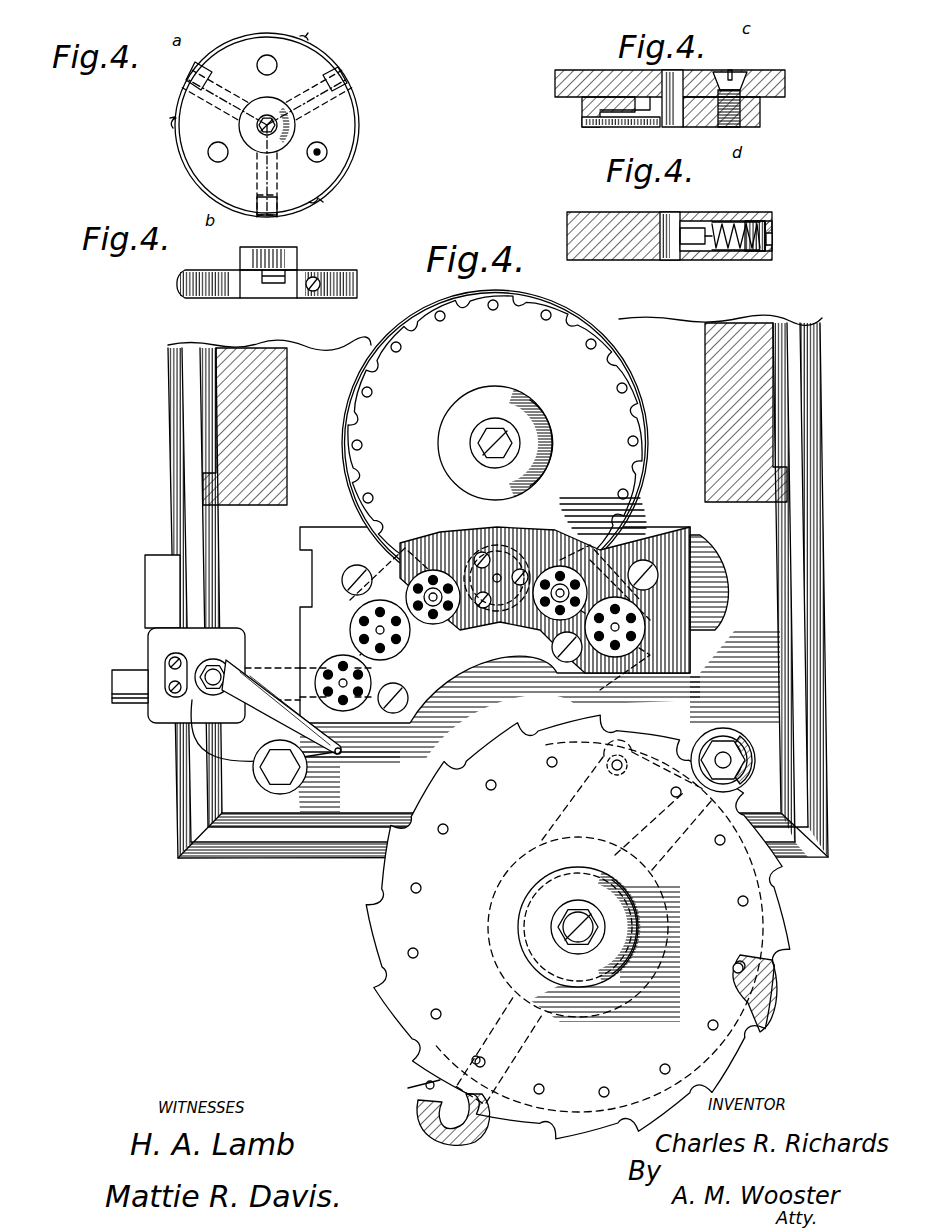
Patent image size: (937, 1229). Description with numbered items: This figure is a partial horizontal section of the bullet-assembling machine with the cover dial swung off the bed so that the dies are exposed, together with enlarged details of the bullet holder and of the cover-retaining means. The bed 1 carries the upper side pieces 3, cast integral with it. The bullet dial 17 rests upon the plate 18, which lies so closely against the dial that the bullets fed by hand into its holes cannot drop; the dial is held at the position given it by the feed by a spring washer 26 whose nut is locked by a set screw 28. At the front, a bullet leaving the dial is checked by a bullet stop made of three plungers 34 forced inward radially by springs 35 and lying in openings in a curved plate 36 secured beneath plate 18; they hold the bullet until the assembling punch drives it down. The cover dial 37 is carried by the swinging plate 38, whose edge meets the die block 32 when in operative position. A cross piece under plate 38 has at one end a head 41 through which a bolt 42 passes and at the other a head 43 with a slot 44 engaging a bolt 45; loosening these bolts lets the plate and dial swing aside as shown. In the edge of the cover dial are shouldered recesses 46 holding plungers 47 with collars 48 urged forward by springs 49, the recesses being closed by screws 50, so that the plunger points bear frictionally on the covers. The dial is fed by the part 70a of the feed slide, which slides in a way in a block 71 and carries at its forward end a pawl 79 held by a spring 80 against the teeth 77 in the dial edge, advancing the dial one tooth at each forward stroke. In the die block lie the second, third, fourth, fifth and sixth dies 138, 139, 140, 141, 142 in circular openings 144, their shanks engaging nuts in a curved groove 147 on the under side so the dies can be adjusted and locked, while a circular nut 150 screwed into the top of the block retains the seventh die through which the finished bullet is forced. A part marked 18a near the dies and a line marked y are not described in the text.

In FIG. 4, the bed 1 is at (858, 629).
In FIG. 4, the upper side pieces 3 is at (228, 405).
In FIG. 4, the bullet dial 17 is at (425, 343).
In FIG. 4C, the plate 18 is at (556, 80).
In FIG. 4, the plate 18 is at (645, 455).
In FIG. 4, the feed roll 18a is at (500, 600).
In FIG. 4, the spring washer 26 is at (455, 410).
In FIG. 4, the set screw 28 is at (478, 450).
In FIG. 4, the die block 32 is at (318, 582).
In FIG. 4A, the plungers 34 is at (345, 78).
In FIG. 4B, the plungers 34 is at (273, 284).
In FIG. 4C, the plungers 34 is at (662, 127).
In FIG. 4A, the springs 35 is at (358, 116).
In FIG. 4B, the springs 35 is at (358, 277).
In FIG. 4C, the springs 35 is at (582, 122).
In FIG. 4A, the plate 36 is at (267, 108).
In FIG. 4D, the cover dial 37 is at (612, 252).
In FIG. 4, the cover dial 37 is at (372, 958).
In FIG. 4, the swinging plate 38 is at (762, 926).
In FIG. 4, the head 41 is at (738, 738).
In FIG. 4, the bolt 42 is at (735, 758).
In FIG. 4, the head 43 is at (462, 1147).
In FIG. 4, the slot 44 is at (412, 1088).
In FIG. 4, the bolt 45 is at (272, 780).
In FIG. 4D, the shouldered recesses 46 is at (772, 222).
In FIG. 4, the shouldered recesses 46 is at (782, 985).
In FIG. 4D, the plungers 47 is at (700, 245).
In FIG. 4D, the collars 48 is at (730, 226).
In FIG. 4D, the springs 49 is at (752, 252).
In FIG. 4D, the screws 50 is at (773, 244).
In FIG. 4, the part of feed slide 70a is at (160, 614).
In FIG. 4, the block 71 is at (128, 676).
In FIG. 4, the teeth 77 is at (350, 437).
In FIG. 4, the pawl 79 is at (280, 704).
In FIG. 4, the spring 80 is at (240, 738).
In FIG. 4, the second die 138 is at (660, 655).
In FIG. 4, the third die 139 is at (576, 627).
In FIG. 4, the fourth die 140 is at (529, 611).
In FIG. 4, the fifth die 141 is at (440, 620).
In FIG. 4, the sixth die 142 is at (400, 645).
In FIG. 4, the circular openings 144 is at (640, 660).
In FIG. 4, the curved groove 147 is at (728, 620).
In FIG. 4, the circular nut 150 is at (372, 684).
In FIG. 4A, the slot y is at (215, 92).